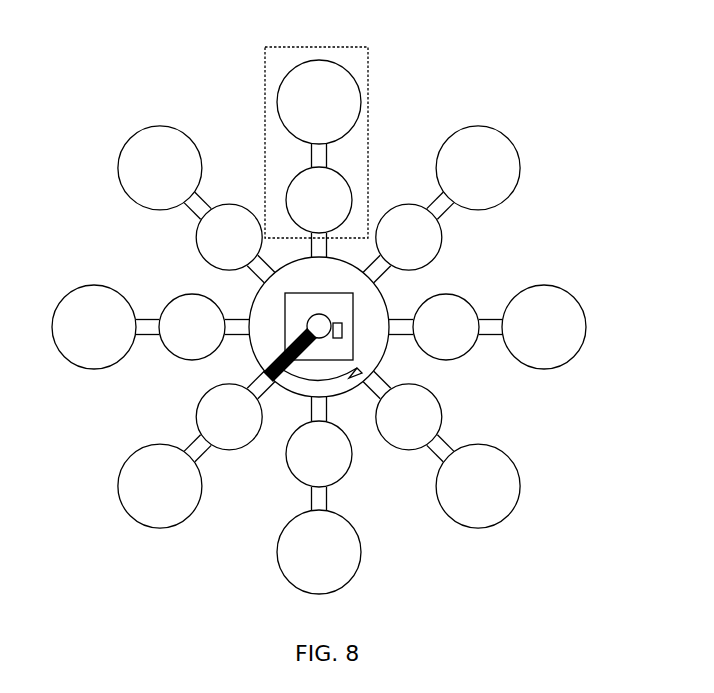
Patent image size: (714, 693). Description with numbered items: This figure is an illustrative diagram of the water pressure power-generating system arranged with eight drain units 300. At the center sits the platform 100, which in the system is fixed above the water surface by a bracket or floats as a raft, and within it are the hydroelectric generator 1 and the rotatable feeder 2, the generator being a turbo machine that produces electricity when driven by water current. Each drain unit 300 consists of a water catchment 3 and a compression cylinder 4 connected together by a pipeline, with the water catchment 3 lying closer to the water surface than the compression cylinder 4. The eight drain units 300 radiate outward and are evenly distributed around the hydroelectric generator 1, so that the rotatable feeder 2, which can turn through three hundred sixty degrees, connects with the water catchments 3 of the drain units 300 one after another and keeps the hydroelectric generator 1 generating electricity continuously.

The hydroelectric generator 1 is at (349, 355).
The rotatable feeder 2 is at (306, 320).
The water catchment 3 is at (292, 186).
The compression cylinder 4 is at (292, 94).
The platform 100 is at (377, 303).
The drain unit 300 is at (386, 110).